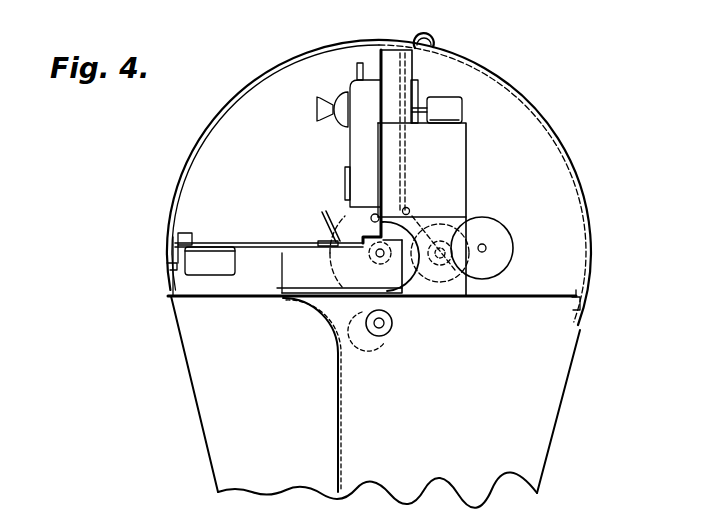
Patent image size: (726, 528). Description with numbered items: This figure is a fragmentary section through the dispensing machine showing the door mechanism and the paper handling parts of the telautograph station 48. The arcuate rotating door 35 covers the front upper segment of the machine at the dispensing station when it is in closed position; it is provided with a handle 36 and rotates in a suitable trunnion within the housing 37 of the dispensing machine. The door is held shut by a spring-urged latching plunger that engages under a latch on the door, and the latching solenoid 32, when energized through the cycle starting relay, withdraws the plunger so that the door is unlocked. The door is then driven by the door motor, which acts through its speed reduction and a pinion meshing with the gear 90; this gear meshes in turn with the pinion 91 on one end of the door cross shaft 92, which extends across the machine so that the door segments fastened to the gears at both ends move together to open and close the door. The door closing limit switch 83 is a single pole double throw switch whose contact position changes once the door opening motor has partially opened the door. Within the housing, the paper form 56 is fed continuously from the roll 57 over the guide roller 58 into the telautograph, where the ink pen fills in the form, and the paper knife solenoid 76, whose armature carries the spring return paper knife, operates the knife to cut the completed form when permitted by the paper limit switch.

The latching solenoid 32 is at (210, 268).
The arcuate rotating door 35 is at (586, 180).
The handle 36 is at (437, 40).
The housing 37 is at (571, 390).
The telautograph station 48 is at (303, 260).
The paper form 56 is at (404, 155).
The roll 57 is at (506, 237).
The guide roller 58 is at (411, 209).
The paper knife solenoid 76 is at (452, 97).
The door closing limit switch 83 is at (188, 232).
The gear 90 is at (342, 219).
The pinion 91 is at (384, 344).
The door cross shaft 92 is at (392, 331).